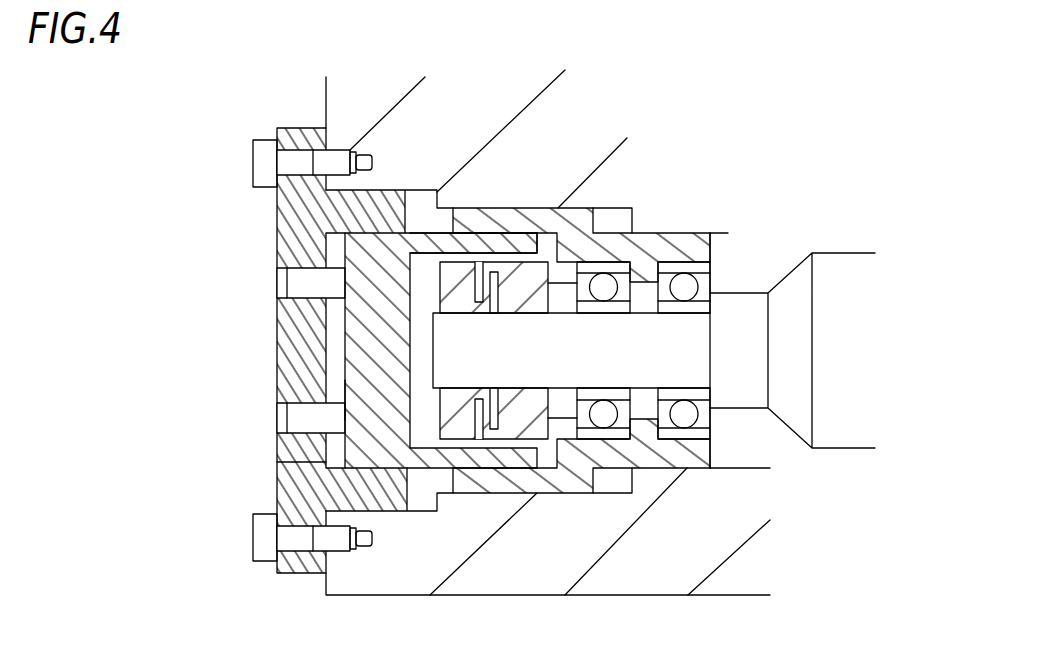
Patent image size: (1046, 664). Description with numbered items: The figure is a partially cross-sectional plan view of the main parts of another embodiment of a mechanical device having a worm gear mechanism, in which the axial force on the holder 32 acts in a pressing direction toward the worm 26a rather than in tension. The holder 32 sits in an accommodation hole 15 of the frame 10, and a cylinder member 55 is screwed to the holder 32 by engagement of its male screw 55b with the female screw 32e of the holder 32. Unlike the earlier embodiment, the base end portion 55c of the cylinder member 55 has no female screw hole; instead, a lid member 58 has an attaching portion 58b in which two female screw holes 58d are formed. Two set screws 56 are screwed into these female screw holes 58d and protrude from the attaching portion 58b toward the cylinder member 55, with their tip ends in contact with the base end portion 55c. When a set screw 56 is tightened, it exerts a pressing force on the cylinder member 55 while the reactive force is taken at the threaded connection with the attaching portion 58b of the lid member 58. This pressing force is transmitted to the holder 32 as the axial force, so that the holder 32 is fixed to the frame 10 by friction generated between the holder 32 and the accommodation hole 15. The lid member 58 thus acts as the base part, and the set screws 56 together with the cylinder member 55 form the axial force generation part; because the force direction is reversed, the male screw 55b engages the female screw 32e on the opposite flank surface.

The frame 10 is at (323, 95).
The accommodation hole 15 is at (757, 475).
The worm 26a is at (836, 464).
The holder 32 is at (606, 482).
The female screw 32e is at (503, 480).
The cylinder member 55 is at (341, 333).
The male screw 55b is at (481, 226).
The base end portion 55c is at (377, 400).
The set screw 56 is at (287, 268).
The lid member 58 is at (282, 573).
The attaching portion 58b is at (277, 462).
The female screw hole 58d is at (277, 217).